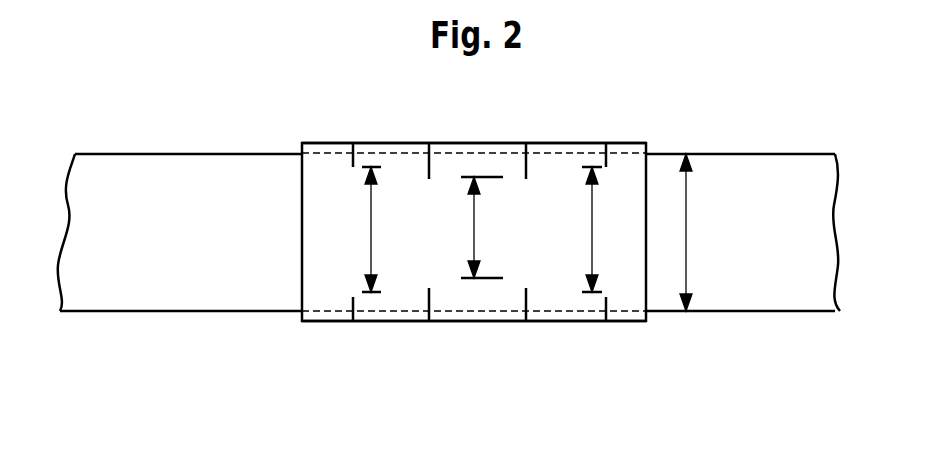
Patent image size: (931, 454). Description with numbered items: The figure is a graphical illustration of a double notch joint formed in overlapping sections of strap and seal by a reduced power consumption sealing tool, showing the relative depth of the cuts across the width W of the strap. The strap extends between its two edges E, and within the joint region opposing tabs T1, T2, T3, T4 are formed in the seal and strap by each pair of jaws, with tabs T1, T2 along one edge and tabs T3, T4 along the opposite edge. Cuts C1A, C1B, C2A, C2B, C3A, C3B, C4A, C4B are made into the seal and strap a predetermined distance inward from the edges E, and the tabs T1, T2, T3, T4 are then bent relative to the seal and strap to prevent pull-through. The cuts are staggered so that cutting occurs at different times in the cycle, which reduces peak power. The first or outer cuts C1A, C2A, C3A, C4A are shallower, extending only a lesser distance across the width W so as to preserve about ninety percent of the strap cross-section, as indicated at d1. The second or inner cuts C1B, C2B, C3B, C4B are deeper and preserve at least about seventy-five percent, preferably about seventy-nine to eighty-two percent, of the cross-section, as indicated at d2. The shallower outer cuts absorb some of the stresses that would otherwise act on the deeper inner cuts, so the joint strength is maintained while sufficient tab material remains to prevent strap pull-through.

The edge of the strap E is at (715, 153).
The width of the strap W is at (687, 217).
The tab T1 is at (360, 143).
The tab T2 is at (569, 143).
The tab T3 is at (573, 321).
The tab T4 is at (382, 321).
The outer shallower cut C1A is at (351, 160).
The inner deeper cut C1B is at (427, 165).
The outer shallower cut C2A is at (608, 162).
The inner deeper cut C2B is at (523, 165).
The outer shallower cut C3A is at (608, 300).
The inner deeper cut C3B is at (530, 300).
The outer shallower cut C4A is at (351, 300).
The inner deeper cut C4B is at (431, 300).
The distance across the width preserved by shallower cut d1 is at (371, 210).
The distance across the width preserved by deeper cut d2 is at (474, 208).